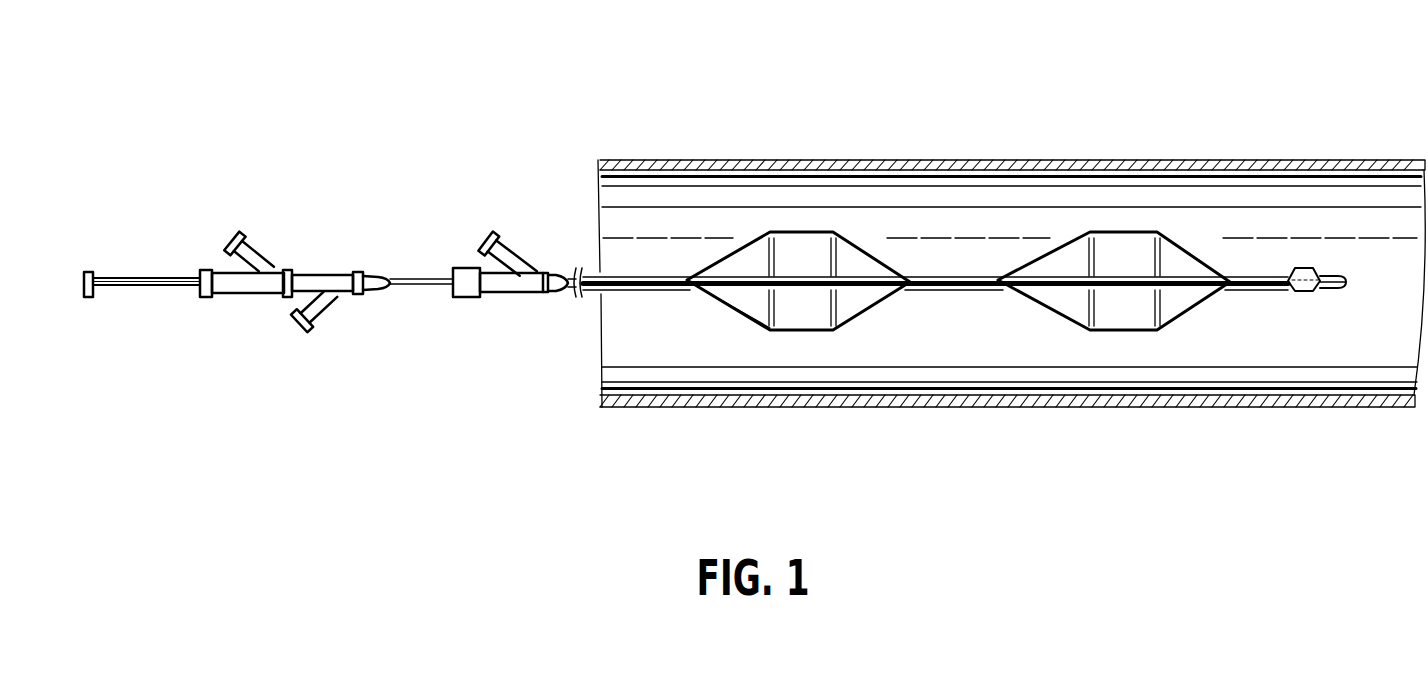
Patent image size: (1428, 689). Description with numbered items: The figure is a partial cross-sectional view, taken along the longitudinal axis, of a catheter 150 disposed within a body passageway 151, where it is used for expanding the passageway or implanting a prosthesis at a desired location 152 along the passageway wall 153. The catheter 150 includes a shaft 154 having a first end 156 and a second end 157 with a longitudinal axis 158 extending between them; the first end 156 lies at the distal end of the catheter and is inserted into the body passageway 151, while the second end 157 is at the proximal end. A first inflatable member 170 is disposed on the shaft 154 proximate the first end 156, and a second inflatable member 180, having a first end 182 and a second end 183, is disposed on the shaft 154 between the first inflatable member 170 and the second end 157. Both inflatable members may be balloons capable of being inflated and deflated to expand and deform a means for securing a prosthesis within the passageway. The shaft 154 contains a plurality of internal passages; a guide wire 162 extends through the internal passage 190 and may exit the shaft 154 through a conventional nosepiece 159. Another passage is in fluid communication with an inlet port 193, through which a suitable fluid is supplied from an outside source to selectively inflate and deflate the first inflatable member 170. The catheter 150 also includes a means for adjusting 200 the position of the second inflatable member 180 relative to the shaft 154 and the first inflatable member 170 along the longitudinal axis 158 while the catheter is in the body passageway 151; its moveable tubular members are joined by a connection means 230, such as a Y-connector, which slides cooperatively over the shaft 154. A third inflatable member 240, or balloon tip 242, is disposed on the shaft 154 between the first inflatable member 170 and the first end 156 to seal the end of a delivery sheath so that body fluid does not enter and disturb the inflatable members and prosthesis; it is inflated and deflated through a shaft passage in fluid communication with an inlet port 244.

The catheter 150 is at (237, 264).
The body passageway 151 is at (700, 160).
The desired location 152 is at (957, 170).
The inner vessel wall surface 153 is at (1172, 182).
The shaft 154 is at (940, 278).
The first end of the shaft 156 is at (1325, 300).
The second end of the shaft 157 is at (393, 303).
The longitudinal axis 158 is at (658, 287).
The nosepiece 159 is at (1325, 285).
The guide wire 162 is at (135, 290).
The first inflatable member 170 is at (1188, 247).
The second inflatable member 180 is at (764, 284).
The first end of the second inflatable member 182 is at (910, 302).
The second end of the second inflatable member 183 is at (707, 317).
The internal passage 190 is at (200, 292).
The inlet port 193 is at (307, 325).
The means for adjusting 200 is at (590, 267).
The connection means 230 is at (518, 297).
The third inflatable member 240 is at (1302, 263).
The balloon tip 242 is at (1310, 290).
The inlet port 244 is at (230, 250).